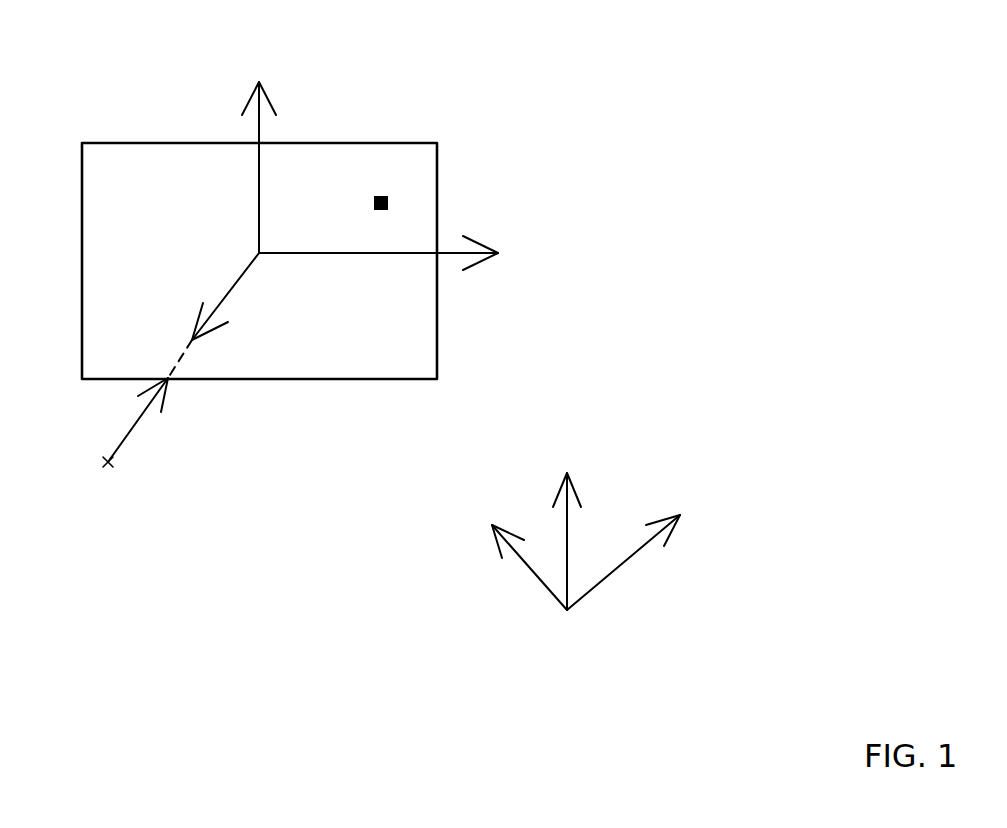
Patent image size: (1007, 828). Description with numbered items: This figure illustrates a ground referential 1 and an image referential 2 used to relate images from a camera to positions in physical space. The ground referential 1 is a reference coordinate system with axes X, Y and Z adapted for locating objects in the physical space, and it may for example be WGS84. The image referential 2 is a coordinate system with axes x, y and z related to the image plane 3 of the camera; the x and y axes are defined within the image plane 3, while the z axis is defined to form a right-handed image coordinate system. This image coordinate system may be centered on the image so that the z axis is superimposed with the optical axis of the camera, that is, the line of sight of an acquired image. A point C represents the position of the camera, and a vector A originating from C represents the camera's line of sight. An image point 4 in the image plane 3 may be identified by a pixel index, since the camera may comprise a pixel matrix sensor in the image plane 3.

The ground referential 1 is at (623, 628).
The image referential 2 is at (553, 128).
The image plane 3 is at (112, 142).
The image point 4 is at (386, 197).